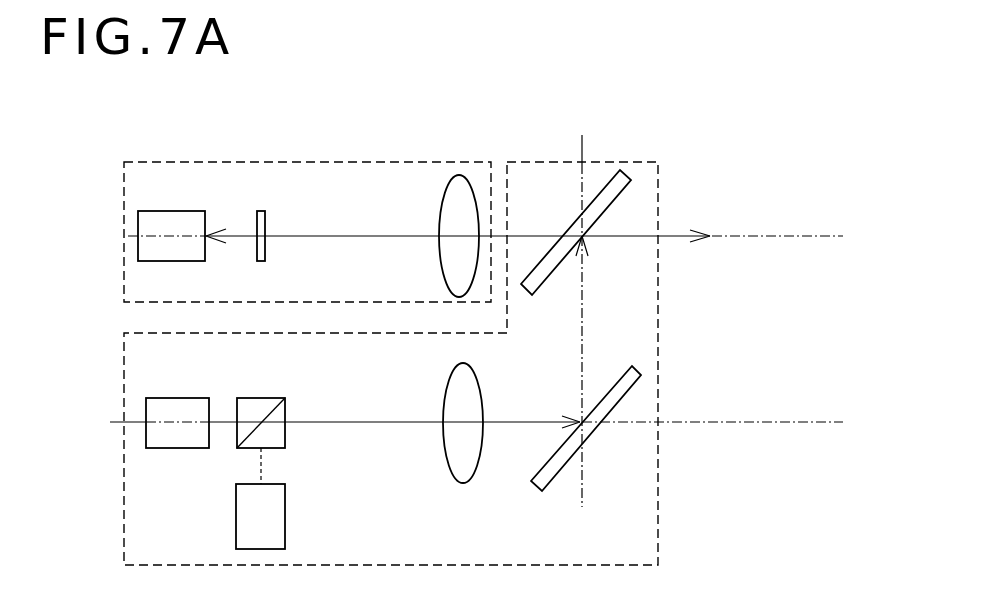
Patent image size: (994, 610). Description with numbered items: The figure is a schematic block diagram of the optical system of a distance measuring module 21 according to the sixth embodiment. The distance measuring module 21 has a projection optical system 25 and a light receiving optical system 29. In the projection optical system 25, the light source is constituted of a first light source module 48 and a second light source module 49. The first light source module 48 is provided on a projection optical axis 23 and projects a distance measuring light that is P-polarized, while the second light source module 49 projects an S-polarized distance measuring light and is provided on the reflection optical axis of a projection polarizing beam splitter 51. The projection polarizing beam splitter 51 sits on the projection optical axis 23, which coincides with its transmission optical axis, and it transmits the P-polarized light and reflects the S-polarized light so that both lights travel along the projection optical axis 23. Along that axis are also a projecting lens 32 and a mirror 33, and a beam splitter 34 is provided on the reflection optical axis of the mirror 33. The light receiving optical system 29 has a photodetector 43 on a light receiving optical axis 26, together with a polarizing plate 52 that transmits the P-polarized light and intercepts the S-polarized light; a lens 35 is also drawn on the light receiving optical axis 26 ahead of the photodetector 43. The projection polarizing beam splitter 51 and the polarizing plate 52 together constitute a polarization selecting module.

The distance measuring module 21 is at (763, 133).
The projection optical axis 23 is at (702, 423).
The projection optical system 25 is at (658, 510).
The light receiving optical axis 26 is at (803, 238).
The light receiving optical system 29 is at (407, 161).
The projecting lens 32 is at (445, 388).
The mirror 33 is at (610, 383).
The beam splitter 34 is at (548, 283).
The condensing lens 35 is at (441, 209).
The photodetector 43 is at (168, 211).
The first light source module 48 is at (172, 398).
The second light source module 49 is at (236, 525).
The projection polarizing beam splitter 51 is at (287, 436).
The polarizing plate 52 is at (266, 247).